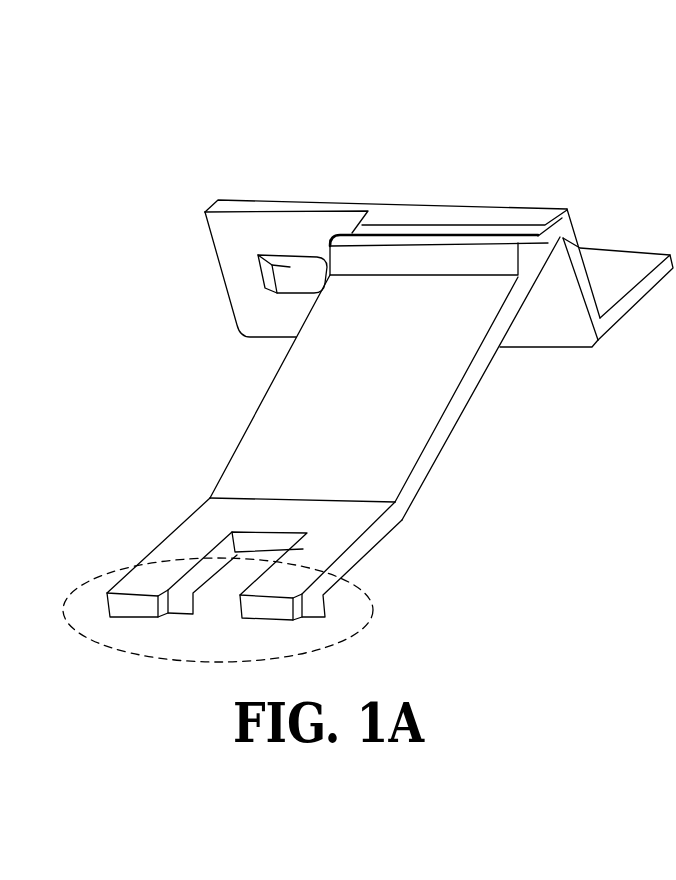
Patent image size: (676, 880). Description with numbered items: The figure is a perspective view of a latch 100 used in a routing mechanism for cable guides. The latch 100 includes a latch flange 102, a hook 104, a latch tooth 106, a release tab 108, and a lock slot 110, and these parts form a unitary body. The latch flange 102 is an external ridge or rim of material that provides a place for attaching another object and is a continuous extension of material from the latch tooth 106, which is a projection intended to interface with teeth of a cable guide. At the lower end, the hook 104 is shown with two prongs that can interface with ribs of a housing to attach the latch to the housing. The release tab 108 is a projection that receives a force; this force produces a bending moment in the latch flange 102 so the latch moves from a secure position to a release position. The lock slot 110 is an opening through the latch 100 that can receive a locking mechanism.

The latch 100 is at (205, 116).
The latch flange 102 is at (252, 420).
The hook 104 is at (64, 600).
The latch tooth 106 is at (517, 252).
The release tab 108 is at (626, 256).
The lock slot 110 is at (297, 268).